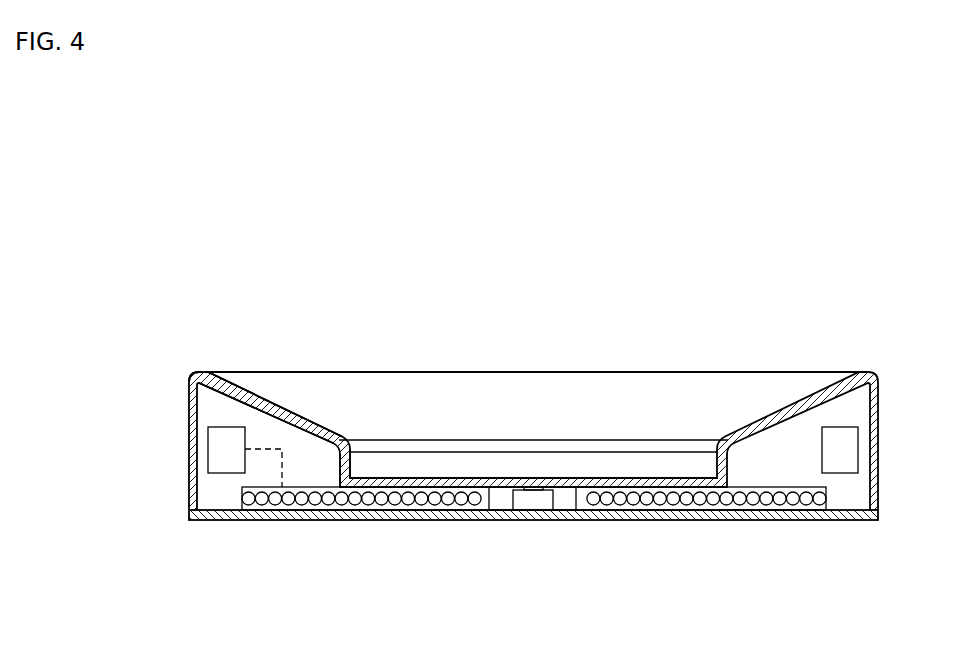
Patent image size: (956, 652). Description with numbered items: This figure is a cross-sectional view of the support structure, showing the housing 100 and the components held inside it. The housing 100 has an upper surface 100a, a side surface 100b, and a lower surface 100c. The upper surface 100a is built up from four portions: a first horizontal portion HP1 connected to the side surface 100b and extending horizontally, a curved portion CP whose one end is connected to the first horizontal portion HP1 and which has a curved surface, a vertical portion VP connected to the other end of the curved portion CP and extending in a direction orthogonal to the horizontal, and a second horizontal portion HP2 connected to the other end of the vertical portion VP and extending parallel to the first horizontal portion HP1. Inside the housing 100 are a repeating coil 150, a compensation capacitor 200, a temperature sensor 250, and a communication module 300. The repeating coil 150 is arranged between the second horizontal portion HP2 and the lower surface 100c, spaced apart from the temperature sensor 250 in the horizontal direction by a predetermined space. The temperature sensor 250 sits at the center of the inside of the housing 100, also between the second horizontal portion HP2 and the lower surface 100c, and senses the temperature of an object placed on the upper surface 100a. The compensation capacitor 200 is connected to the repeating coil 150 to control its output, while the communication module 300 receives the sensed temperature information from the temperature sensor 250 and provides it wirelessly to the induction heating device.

The housing 100 is at (330, 239).
The upper surface 100a is at (428, 283).
The side surface 100b is at (190, 430).
The lower surface 100c is at (190, 513).
The first horizontal portion HP1 is at (211, 372).
The curved portion CP is at (286, 410).
The vertical portion VP is at (349, 456).
The second horizontal portion HP2 is at (408, 480).
The compensation capacitor 200 is at (227, 473).
The communication module 300 is at (840, 473).
The repeating coil 150 is at (446, 510).
The temperature sensor 250 is at (532, 500).